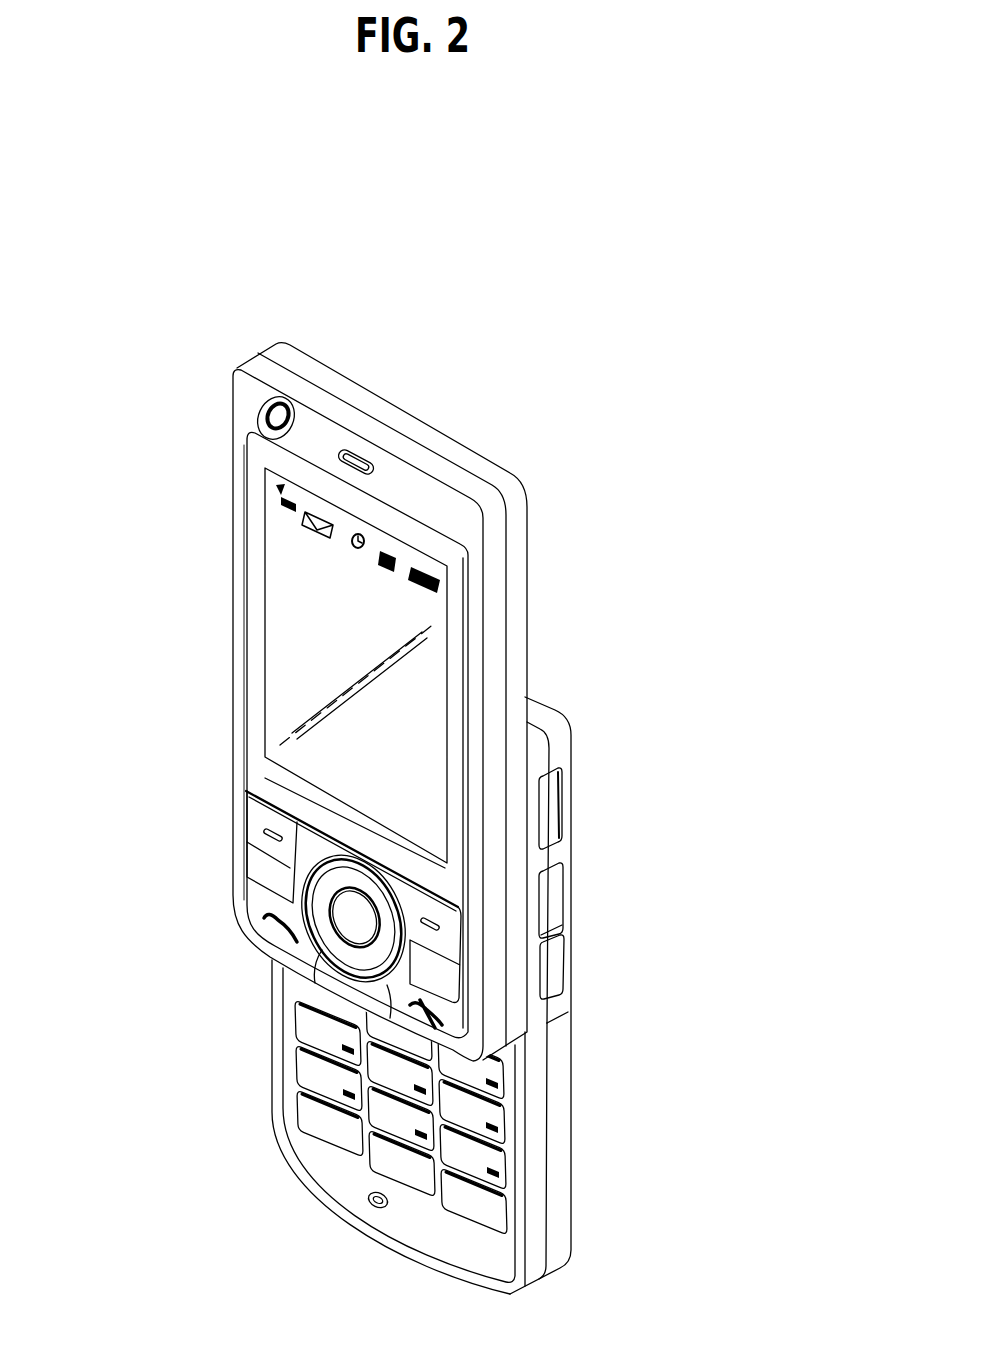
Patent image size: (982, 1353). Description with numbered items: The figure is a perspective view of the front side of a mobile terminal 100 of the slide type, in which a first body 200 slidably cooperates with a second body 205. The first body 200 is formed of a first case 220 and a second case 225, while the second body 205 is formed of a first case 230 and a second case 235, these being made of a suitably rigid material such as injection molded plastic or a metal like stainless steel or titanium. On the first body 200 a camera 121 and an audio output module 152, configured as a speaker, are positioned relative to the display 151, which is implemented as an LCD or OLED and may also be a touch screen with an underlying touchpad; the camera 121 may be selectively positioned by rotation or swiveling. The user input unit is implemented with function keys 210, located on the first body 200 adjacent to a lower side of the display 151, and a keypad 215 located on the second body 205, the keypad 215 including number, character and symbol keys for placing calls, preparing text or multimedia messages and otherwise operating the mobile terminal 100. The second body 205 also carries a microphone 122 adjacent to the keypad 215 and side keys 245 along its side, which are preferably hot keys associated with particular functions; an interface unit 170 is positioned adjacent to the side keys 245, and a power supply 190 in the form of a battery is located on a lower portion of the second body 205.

The mobile terminal 100 is at (565, 376).
The camera 121 is at (266, 414).
The microphone 122 is at (376, 1210).
The display 151 is at (285, 605).
The audio output module 152 is at (356, 452).
The interface unit 170 is at (553, 802).
The power supply 190 is at (563, 1120).
The first body 200 is at (198, 500).
The second body 205 is at (253, 1041).
The function keys 210 is at (258, 865).
The keypad 215 is at (303, 1104).
The first case 220 is at (497, 595).
The second case 225 is at (520, 553).
The first case 230 is at (538, 739).
The second case 235 is at (565, 766).
The side keys 245 is at (557, 958).